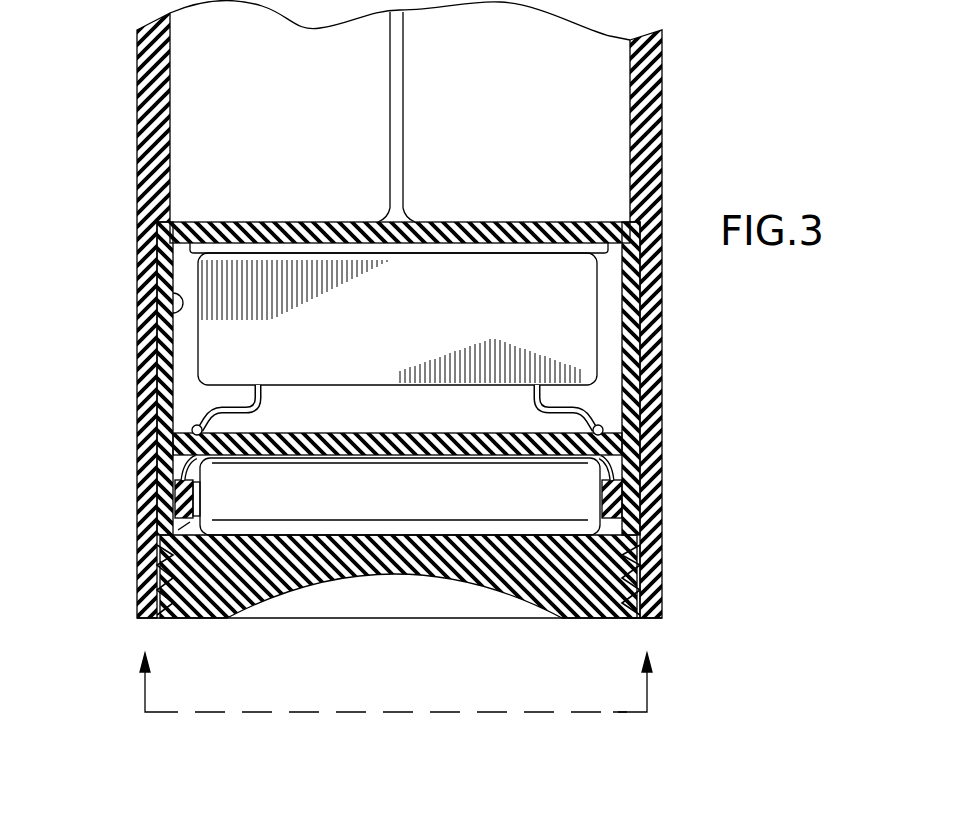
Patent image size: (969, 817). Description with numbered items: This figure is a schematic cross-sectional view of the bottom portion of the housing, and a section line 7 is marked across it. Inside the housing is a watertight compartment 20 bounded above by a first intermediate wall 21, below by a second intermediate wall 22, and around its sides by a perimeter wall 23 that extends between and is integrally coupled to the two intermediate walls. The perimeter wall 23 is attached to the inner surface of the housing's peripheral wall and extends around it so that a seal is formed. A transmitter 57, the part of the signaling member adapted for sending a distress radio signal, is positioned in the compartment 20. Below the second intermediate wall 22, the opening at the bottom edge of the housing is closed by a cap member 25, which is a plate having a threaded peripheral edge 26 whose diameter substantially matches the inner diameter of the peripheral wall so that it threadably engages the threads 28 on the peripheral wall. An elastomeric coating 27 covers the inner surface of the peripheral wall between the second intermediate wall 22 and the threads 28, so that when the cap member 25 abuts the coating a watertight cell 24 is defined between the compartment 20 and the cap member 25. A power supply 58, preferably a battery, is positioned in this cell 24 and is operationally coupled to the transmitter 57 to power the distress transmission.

The compartment 20 is at (408, 309).
The first intermediate wall 21 is at (598, 224).
The second intermediate wall 22 is at (150, 382).
The perimeter wall 23 is at (155, 280).
The watertight cell 24 is at (185, 530).
The cap member 25 is at (592, 618).
The threaded peripheral edge 26 is at (662, 598).
The elastomeric coating 27 is at (655, 573).
The threads 28 is at (140, 585).
The transmitter 57 is at (552, 313).
The power supply 58 is at (573, 498).
The section line 7- 7 is at (396, 692).